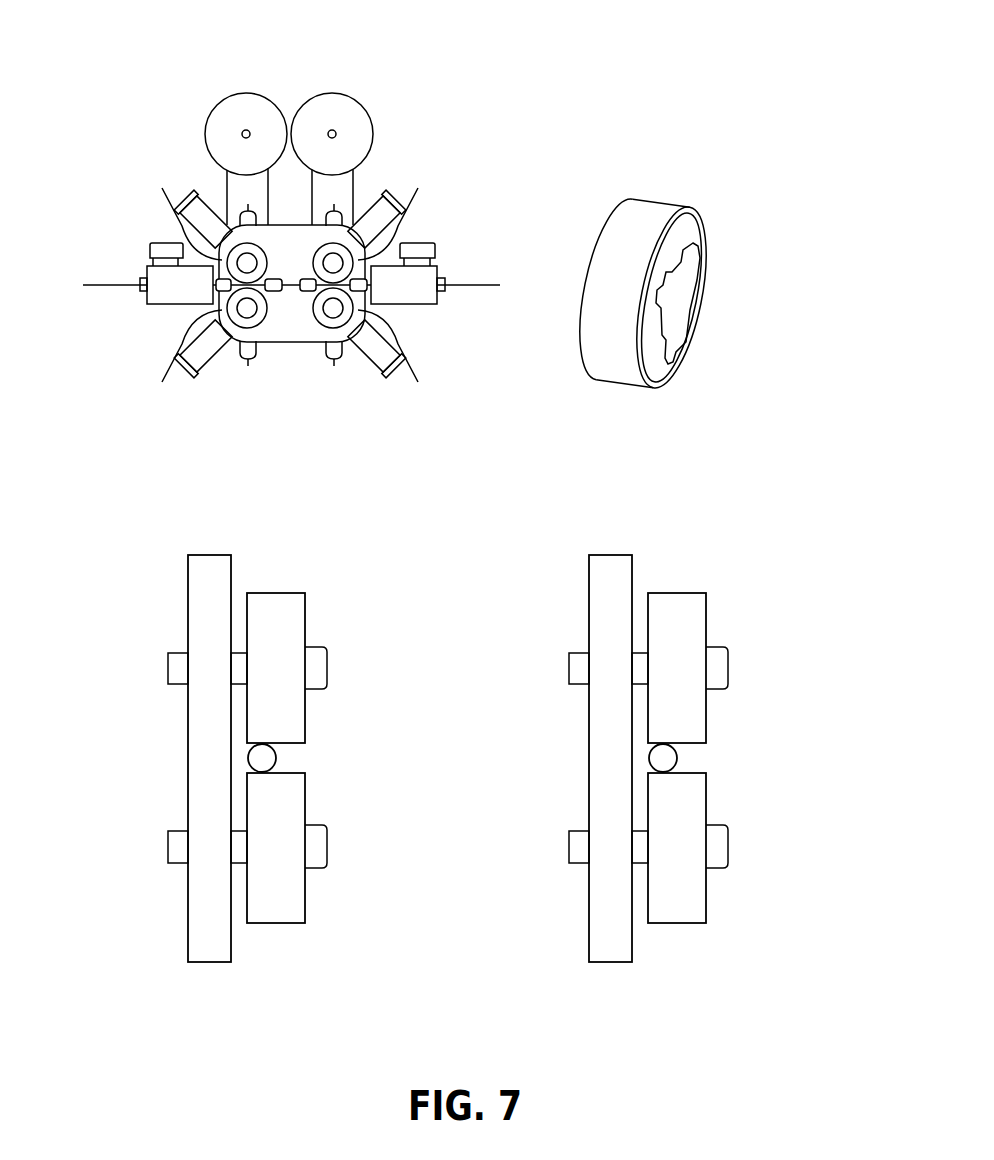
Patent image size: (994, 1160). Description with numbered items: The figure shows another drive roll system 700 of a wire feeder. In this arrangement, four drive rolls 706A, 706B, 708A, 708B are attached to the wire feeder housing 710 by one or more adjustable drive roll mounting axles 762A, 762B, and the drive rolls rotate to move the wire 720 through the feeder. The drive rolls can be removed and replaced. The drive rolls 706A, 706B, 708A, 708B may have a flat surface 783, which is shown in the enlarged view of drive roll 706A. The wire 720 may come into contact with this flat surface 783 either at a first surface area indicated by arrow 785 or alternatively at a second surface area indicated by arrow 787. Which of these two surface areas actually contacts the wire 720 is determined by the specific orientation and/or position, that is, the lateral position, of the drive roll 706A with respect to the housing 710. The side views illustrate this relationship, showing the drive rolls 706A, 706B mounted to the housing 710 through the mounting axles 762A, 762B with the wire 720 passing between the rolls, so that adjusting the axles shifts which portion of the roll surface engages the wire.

The drive roll system 700 is at (160, 62).
The drive roll 706A is at (753, 591).
The drive roll 706B is at (753, 937).
The drive roll 708A is at (187, 358).
The drive roll 708B is at (398, 358).
The wire feeder housing 710 is at (273, 343).
The wire 720 is at (131, 285).
The adjustable drive roll mounting axle 762A is at (180, 653).
The adjustable drive roll mounting axle 762B is at (178, 829).
The flat surface 783 is at (630, 245).
The arrow indicating first surface area 785 is at (643, 205).
The arrow indicating second surface area 787 is at (666, 205).